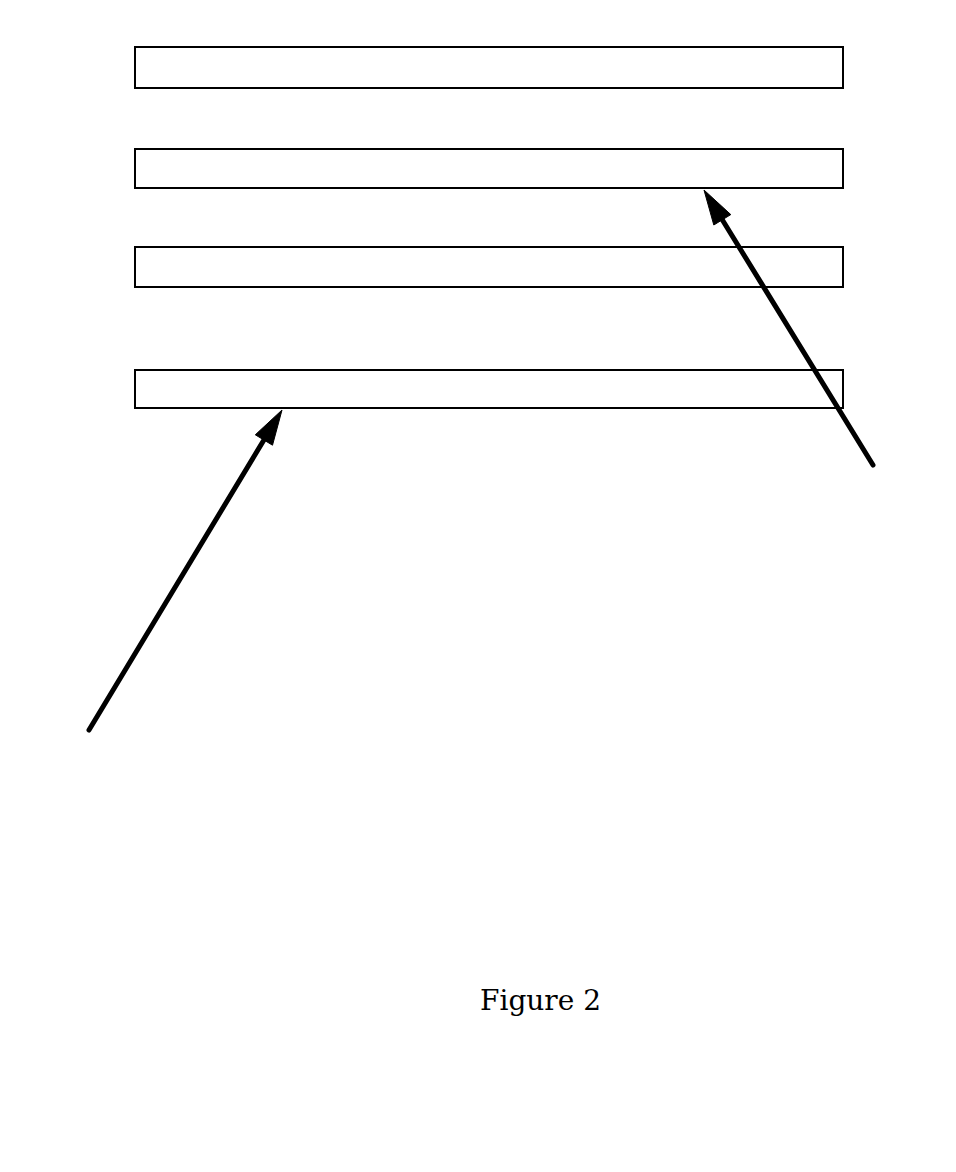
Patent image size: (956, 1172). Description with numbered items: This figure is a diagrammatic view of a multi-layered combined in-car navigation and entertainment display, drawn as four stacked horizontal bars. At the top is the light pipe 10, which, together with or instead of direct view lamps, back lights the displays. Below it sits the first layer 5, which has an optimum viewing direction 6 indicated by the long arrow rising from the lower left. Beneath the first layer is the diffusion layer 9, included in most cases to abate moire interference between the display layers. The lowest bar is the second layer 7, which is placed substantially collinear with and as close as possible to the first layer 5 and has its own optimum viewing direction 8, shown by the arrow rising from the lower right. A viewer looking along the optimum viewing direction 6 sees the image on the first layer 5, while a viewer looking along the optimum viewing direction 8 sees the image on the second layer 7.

The light pipe 10 is at (489, 59).
The first layer 5 is at (489, 160).
The diffusion layer 9 is at (489, 256).
The second layer 7 is at (489, 378).
The optimum viewing direction 8 is at (799, 351).
The optimum viewing direction 6 is at (163, 603).